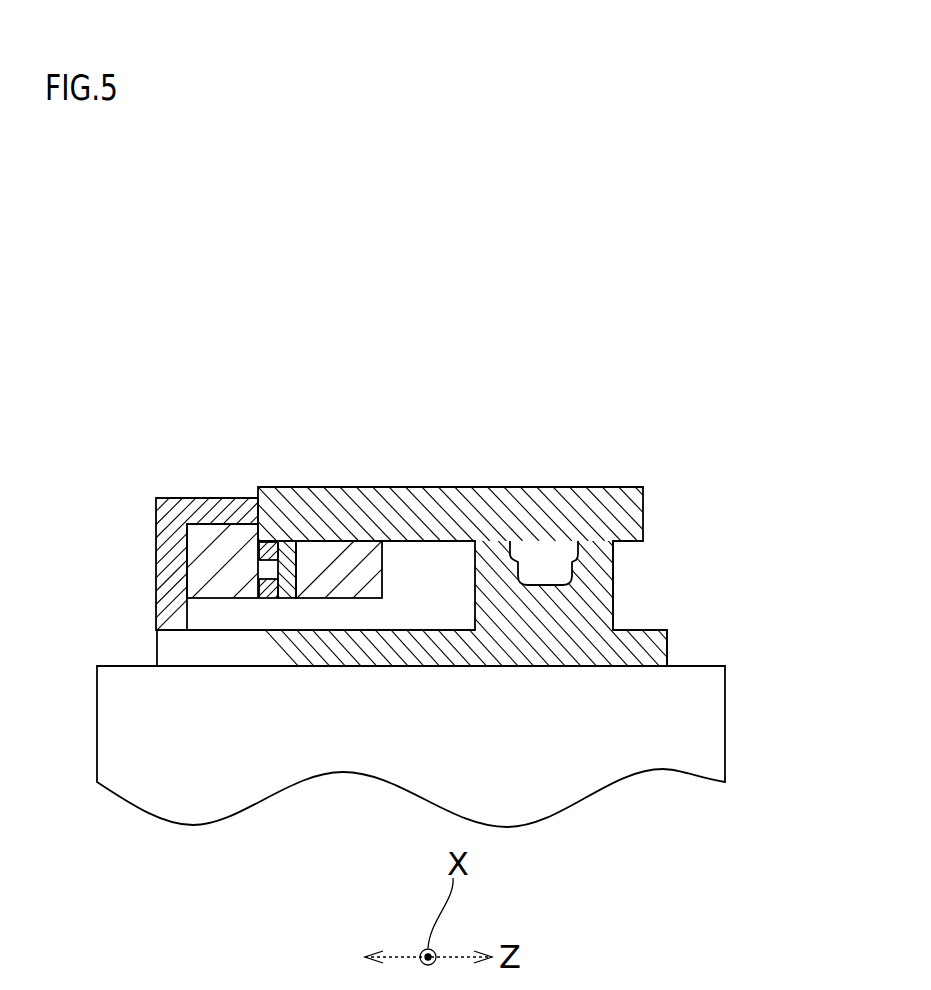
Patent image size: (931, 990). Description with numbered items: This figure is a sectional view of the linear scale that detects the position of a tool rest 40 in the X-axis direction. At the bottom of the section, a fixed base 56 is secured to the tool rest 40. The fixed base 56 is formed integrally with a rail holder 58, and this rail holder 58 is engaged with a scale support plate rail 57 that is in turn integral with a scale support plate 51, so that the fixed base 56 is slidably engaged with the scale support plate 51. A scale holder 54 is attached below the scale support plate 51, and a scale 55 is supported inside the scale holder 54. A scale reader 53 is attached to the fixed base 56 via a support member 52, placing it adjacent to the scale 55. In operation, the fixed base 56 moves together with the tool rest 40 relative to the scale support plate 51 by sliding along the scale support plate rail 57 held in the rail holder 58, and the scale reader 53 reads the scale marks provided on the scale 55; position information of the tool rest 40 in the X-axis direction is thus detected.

The tool rest 40 is at (712, 725).
The scale support plate 51 is at (582, 487).
The support member 52 is at (178, 498).
The scale reader 53 is at (217, 552).
The scale holder 54 is at (380, 565).
The scale 55 is at (296, 567).
The fixed base 56 is at (643, 628).
The scale support plate rail 57 is at (580, 558).
The rail holder 58 is at (613, 585).